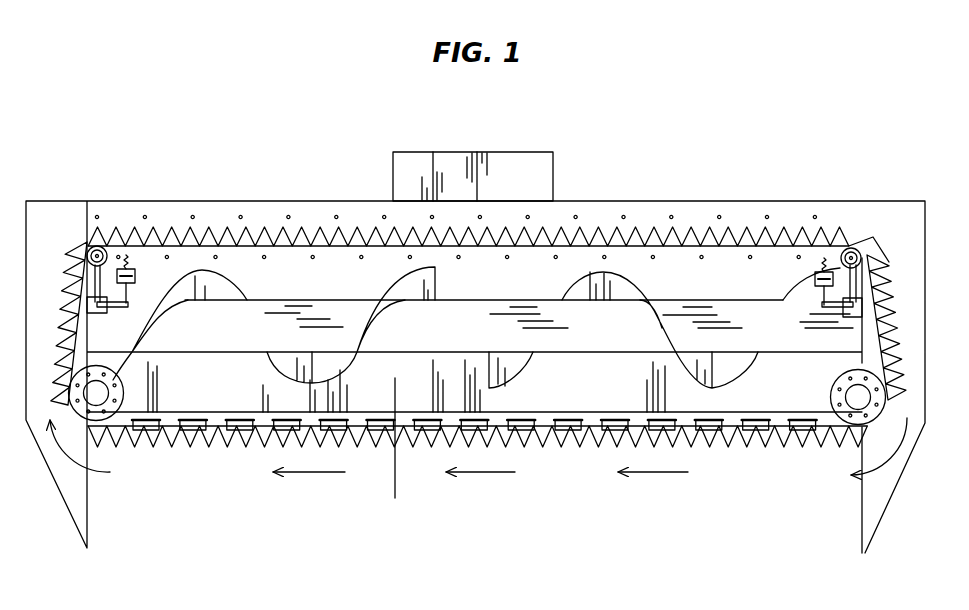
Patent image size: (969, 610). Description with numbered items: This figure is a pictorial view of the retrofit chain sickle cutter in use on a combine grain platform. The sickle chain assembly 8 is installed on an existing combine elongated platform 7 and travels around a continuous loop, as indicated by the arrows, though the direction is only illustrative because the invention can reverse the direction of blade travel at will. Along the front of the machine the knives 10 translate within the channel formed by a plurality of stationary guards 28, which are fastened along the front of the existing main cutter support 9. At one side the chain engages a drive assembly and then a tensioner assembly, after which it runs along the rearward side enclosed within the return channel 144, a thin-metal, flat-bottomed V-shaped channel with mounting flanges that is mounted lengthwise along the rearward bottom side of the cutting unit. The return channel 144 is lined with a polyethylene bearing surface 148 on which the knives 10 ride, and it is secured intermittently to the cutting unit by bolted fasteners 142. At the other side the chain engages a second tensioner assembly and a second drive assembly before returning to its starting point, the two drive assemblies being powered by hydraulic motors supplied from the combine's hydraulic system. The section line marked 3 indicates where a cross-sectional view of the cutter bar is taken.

The combine elongated platform 7 is at (170, 200).
The polyethylene bearing surface 148 is at (221, 228).
The bolted fasteners 142 is at (623, 215).
The return channel 144 is at (686, 222).
The main cutter support 9 is at (219, 417).
The stationary guards 28 is at (186, 448).
The sickle chain assembly 8 is at (731, 449).
The knives 10 is at (813, 443).
The section line 3- 3 is at (358, 378).